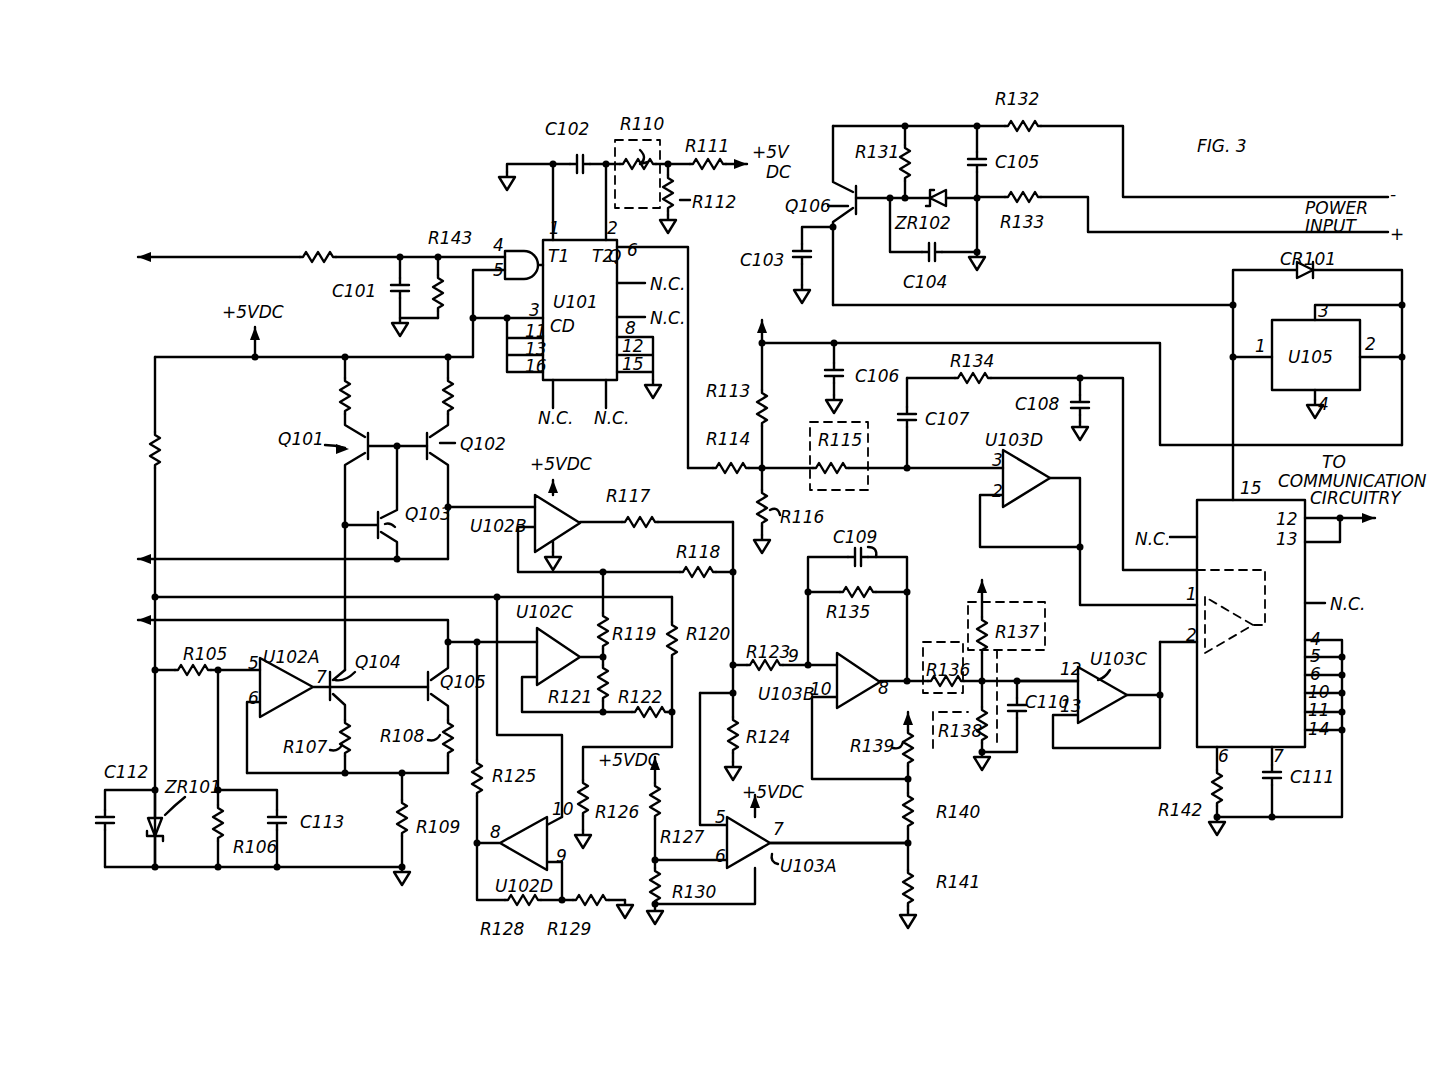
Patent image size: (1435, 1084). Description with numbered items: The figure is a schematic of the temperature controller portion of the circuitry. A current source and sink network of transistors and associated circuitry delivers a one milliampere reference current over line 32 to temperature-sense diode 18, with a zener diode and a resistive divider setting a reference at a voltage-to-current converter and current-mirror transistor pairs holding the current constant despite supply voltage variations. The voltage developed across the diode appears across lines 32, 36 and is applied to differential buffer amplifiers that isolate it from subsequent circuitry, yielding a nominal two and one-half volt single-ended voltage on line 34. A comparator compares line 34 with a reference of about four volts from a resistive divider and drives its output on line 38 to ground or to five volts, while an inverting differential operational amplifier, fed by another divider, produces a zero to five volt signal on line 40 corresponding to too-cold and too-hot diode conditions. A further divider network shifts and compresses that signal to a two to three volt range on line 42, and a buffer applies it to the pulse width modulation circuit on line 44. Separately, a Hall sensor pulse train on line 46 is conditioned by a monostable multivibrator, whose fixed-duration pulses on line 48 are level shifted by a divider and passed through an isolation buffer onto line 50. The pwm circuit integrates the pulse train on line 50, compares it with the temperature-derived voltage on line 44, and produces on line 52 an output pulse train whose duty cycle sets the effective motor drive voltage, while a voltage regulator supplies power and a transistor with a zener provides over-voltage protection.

The temperature-sense diode 18 is at (1202, 748).
The line 32 is at (268, 557).
The line 34 is at (733, 595).
The line 36 is at (249, 618).
The line 38 is at (864, 838).
The line 40 is at (905, 680).
The line 42 is at (1035, 681).
The line 44 is at (1160, 642).
The line 46 is at (270, 247).
The line 48 is at (688, 313).
The line 50 is at (1080, 588).
The line 52 is at (1340, 532).